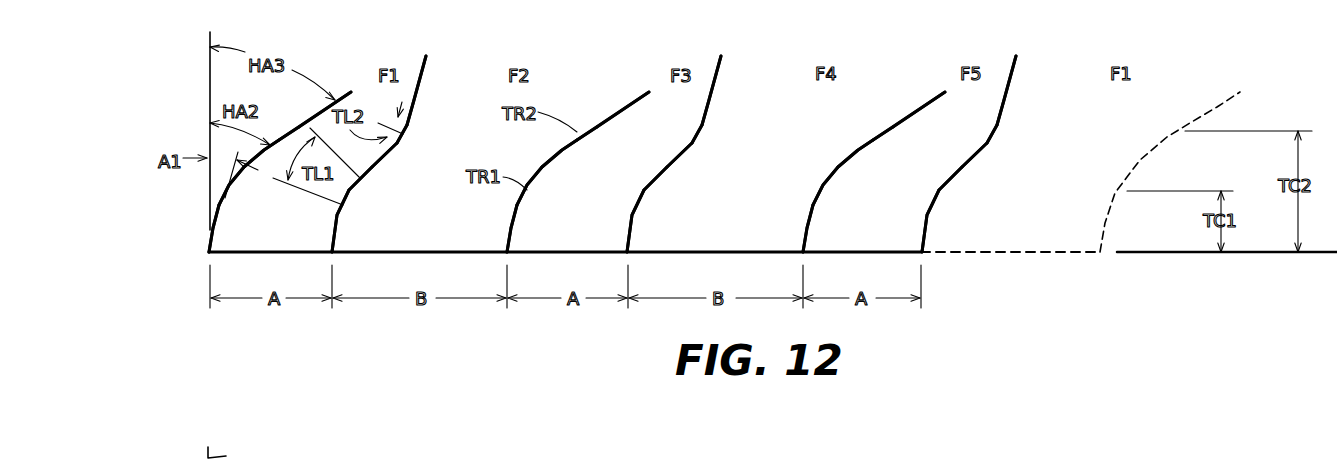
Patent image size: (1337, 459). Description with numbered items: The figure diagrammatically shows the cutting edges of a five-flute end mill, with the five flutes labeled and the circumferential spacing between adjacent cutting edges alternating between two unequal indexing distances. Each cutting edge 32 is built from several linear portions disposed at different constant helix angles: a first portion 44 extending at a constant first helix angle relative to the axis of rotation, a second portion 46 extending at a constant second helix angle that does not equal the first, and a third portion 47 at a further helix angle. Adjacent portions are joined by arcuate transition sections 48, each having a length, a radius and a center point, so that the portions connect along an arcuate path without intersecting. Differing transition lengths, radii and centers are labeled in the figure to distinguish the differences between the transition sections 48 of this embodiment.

The cutting edge 32 is at (348, 90).
The first portion 44 is at (215, 228).
The second portion 46 is at (375, 167).
The third portion 47 is at (418, 96).
The arcuate transition section 48 is at (353, 197).